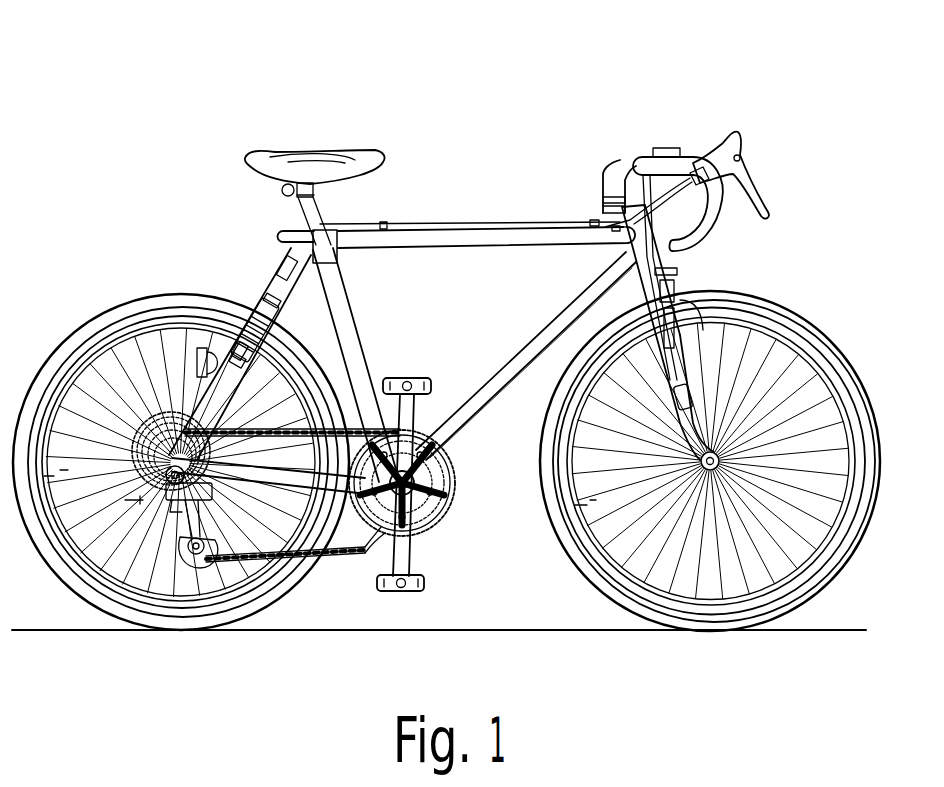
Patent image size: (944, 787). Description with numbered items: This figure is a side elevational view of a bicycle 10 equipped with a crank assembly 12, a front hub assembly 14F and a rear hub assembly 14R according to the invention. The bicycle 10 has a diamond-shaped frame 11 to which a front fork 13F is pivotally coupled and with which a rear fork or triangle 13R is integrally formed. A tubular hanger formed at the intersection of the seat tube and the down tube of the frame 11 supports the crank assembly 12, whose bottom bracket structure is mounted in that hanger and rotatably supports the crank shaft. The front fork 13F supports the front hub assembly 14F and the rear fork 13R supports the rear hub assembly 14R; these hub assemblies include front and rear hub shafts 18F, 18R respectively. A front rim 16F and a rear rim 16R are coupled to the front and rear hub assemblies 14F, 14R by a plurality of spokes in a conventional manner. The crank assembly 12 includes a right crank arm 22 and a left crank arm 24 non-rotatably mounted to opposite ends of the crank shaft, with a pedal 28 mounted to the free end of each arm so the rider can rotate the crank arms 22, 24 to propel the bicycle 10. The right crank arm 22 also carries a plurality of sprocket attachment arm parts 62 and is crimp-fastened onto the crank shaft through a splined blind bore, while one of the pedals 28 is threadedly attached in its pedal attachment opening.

The bicycle 10 is at (665, 103).
The frame 11 is at (417, 237).
The crank assembly 12 is at (428, 567).
The rear fork 13R is at (242, 298).
The front fork 13F is at (665, 368).
The rear hub assembly 14R is at (84, 546).
The front hub assembly 14F is at (687, 493).
The rear rim 16R is at (64, 340).
The front rim 16F is at (791, 322).
The rear hub shaft 18R is at (136, 490).
The front hub shaft 18F is at (723, 468).
The right crank arm 22 is at (402, 553).
The left crank arm 24 is at (418, 378).
The pedal 28 is at (440, 390).
The sprocket attachment arm parts 62 is at (450, 452).